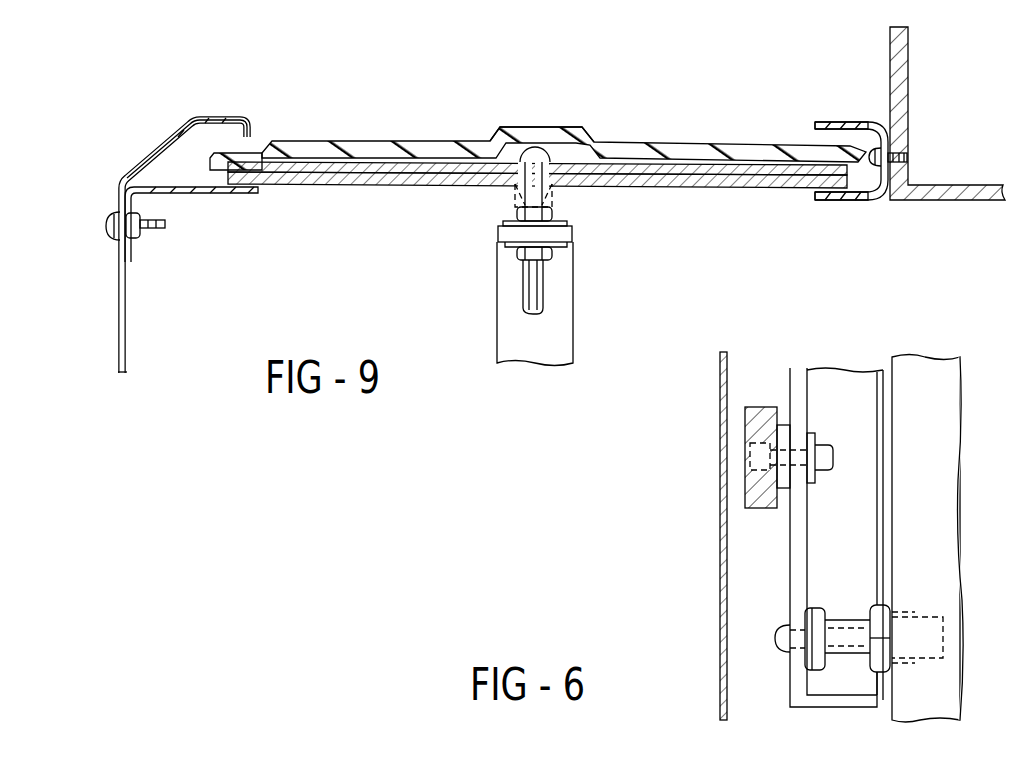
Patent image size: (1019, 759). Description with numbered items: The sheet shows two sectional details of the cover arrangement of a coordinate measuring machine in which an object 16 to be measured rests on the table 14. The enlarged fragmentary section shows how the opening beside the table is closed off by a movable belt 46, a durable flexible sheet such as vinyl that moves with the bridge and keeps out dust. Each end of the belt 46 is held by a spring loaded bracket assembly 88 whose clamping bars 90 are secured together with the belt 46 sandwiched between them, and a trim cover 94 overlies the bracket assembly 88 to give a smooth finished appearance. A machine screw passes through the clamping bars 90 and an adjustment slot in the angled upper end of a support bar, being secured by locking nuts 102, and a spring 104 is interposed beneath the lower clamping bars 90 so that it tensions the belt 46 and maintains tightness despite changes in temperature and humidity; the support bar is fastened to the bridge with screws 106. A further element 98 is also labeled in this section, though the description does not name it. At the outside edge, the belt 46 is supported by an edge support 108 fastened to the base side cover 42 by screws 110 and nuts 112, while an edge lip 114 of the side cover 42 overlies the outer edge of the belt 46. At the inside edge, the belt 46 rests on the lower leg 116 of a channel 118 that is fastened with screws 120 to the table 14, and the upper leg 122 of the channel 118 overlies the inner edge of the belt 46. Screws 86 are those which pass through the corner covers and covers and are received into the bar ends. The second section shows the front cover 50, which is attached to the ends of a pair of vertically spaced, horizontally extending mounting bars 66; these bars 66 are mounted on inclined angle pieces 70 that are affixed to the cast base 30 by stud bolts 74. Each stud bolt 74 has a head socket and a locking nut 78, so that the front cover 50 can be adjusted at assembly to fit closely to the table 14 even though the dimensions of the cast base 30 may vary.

In FIG. 9, the table 14 is at (905, 48).
In FIG. 9, the base side cover 42 is at (118, 300).
In FIG. 9, the movable belt 46 is at (752, 170).
In FIG. 9, the screws 86 is at (520, 152).
In FIG. 9, the spring loaded bracket assembly 88 is at (690, 100).
In FIG. 9, the clamping bars 90 is at (712, 186).
In FIG. 9, the trim cover 94 is at (553, 128).
In FIG. 9, the mounting plate 98 is at (497, 232).
In FIG. 9, the locking nuts 102 is at (565, 250).
In FIG. 9, the spring 104 is at (514, 200).
In FIG. 9, the screws 106 is at (497, 306).
In FIG. 9, the edge support 108 is at (206, 194).
In FIG. 9, the screws 110 is at (108, 225).
In FIG. 9, the nuts 112 is at (136, 240).
In FIG. 9, the edge lip 114 is at (170, 135).
In FIG. 9, the lower leg 116 is at (845, 200).
In FIG. 9, the channel 118 is at (886, 120).
In FIG. 9, the screws 120 is at (873, 150).
In FIG. 9, the upper leg 122 is at (826, 122).
In FIG. 6, the object 16 is at (812, 608).
In FIG. 6, the base 30 is at (942, 470).
In FIG. 6, the front cover 50 is at (718, 580).
In FIG. 6, the mounting bars 66 is at (757, 407).
In FIG. 6, the inclined angle pieces 70 is at (842, 376).
In FIG. 6, the stud bolts 74 is at (845, 620).
In FIG. 6, the locking nut 78 is at (876, 672).